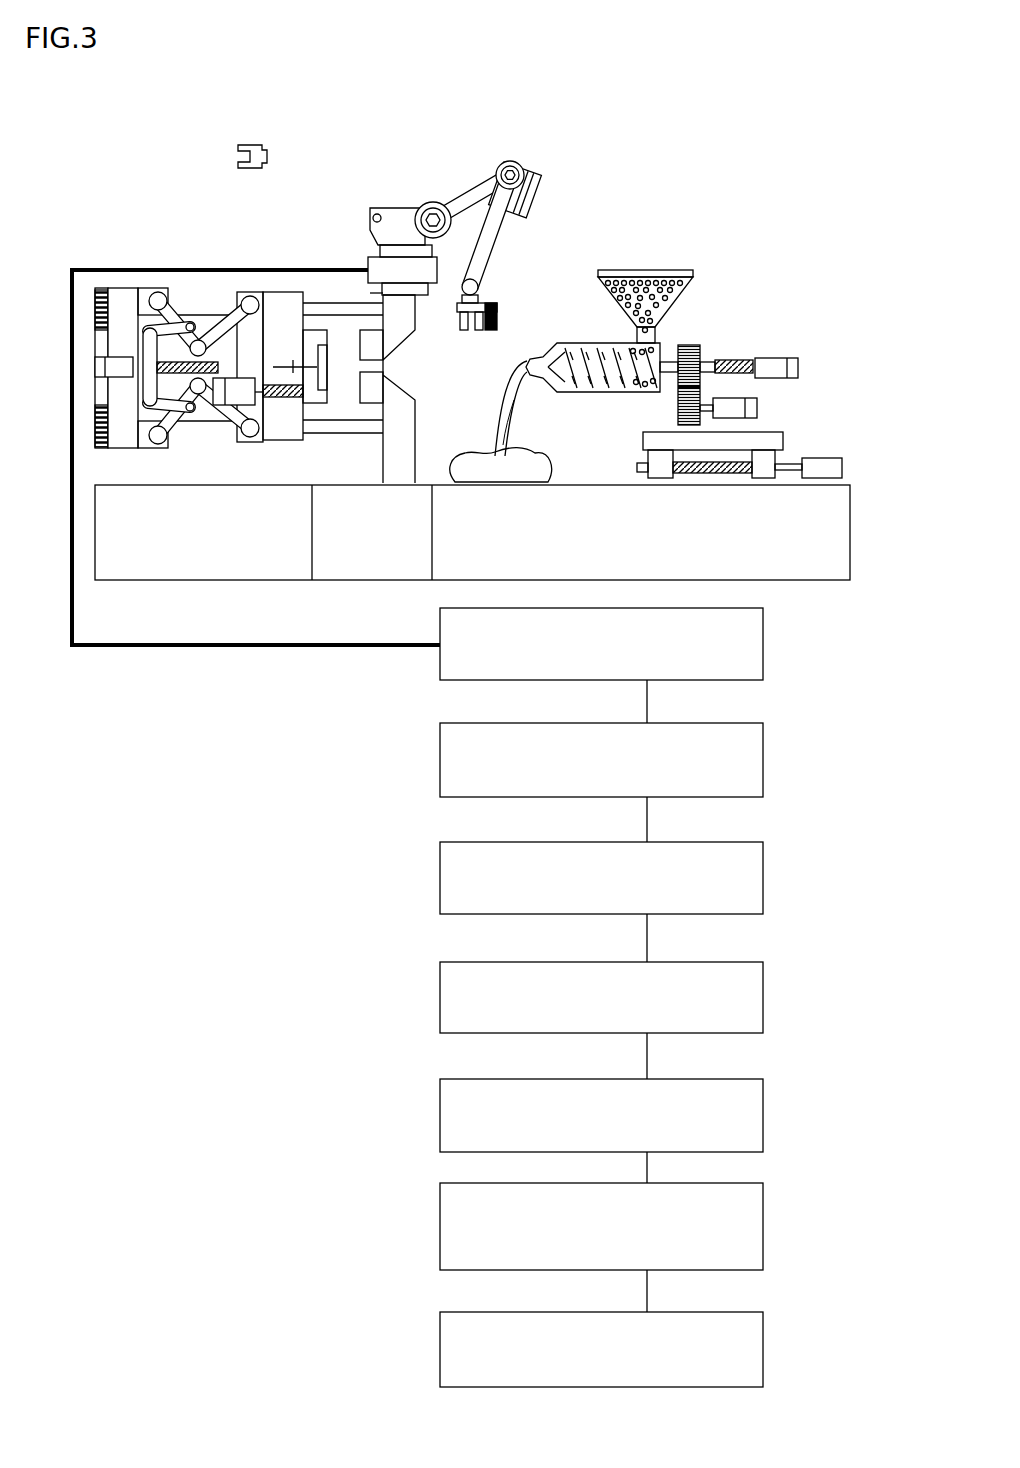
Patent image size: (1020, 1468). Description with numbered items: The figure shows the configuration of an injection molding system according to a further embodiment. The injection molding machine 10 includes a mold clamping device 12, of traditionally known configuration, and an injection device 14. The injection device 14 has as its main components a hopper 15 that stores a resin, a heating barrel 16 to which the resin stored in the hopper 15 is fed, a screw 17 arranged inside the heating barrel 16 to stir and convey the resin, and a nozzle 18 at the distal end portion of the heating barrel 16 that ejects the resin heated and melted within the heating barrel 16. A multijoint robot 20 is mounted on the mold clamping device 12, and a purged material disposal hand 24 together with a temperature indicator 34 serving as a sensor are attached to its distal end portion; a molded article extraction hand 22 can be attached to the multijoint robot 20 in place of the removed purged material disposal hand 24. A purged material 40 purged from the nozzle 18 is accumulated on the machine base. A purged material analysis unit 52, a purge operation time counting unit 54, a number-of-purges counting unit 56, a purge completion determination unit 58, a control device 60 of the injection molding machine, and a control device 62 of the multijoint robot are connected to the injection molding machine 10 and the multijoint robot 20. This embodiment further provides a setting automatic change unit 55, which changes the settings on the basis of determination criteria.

The injection molding machine 10 is at (735, 203).
The mold clamping device 12 is at (128, 268).
The injection device 14 is at (702, 318).
The hopper 15 is at (675, 268).
The heating barrel 16 is at (584, 343).
The screw 17 is at (630, 386).
The nozzle 18 is at (534, 358).
The multijoint robot 20 is at (455, 195).
The molded article extraction hand 22 is at (268, 152).
The purged material disposal hand 24 is at (465, 330).
The temperature indicator 34 is at (498, 312).
The purged material 40 is at (553, 458).
The purged material analysis unit 52 is at (763, 640).
The purge operation time counting unit 54 is at (763, 755).
The setting automatic change unit 55 is at (763, 877).
The number-of-purges counting unit 56 is at (763, 997).
The purge completion determination unit 58 is at (763, 1115).
The control device of the injection molding machine 60 is at (763, 1232).
The control device of the multijoint robot 62 is at (763, 1348).